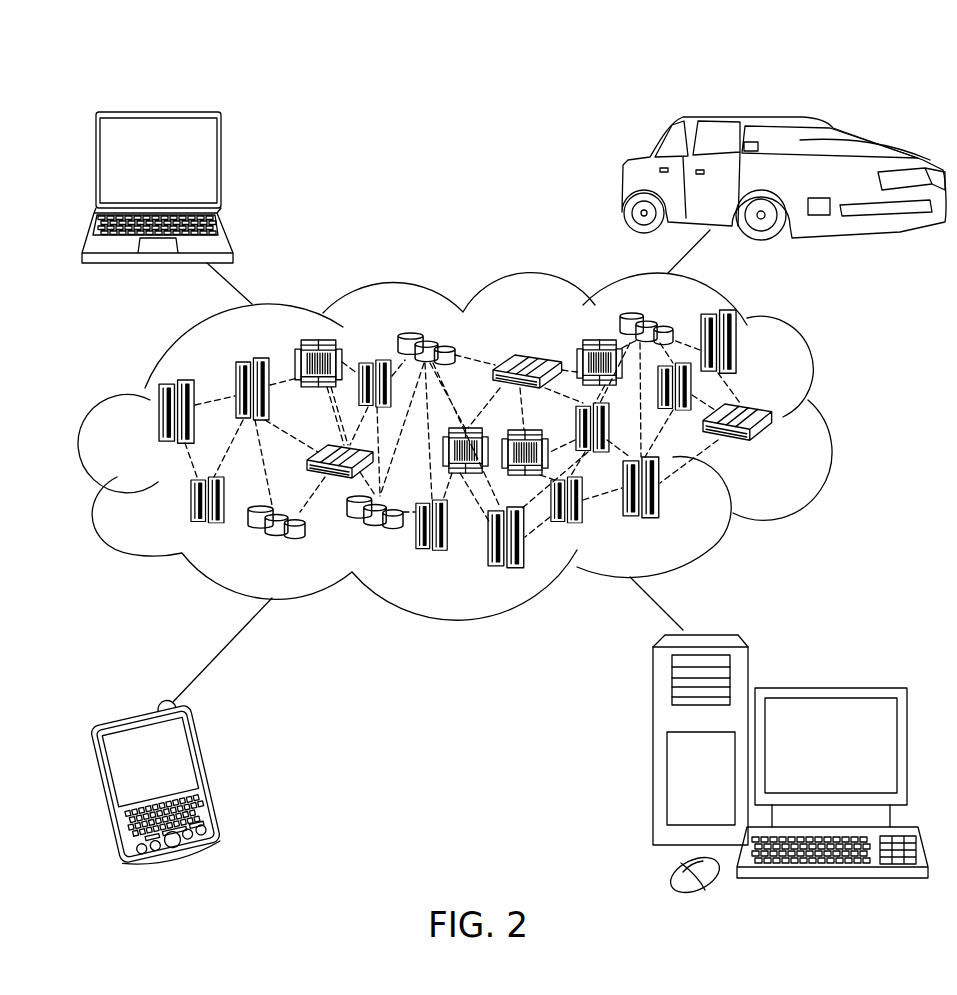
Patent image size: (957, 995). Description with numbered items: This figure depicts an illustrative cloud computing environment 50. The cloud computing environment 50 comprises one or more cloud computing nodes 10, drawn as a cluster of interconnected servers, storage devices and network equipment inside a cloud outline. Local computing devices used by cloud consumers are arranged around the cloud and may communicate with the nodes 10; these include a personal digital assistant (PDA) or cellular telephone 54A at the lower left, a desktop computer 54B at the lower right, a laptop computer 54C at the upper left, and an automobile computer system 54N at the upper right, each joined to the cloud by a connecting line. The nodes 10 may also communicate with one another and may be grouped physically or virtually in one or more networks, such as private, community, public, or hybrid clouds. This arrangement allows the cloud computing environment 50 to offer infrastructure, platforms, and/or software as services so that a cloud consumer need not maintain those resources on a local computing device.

The cloud computing node 10 is at (778, 450).
The cloud computing environment 50 is at (830, 418).
The personal digital assistant (PDA) or cellular telephone 54A is at (213, 773).
The desktop computer 54B is at (828, 687).
The laptop computer 54C is at (222, 168).
The automobile computer system 54N is at (625, 183).